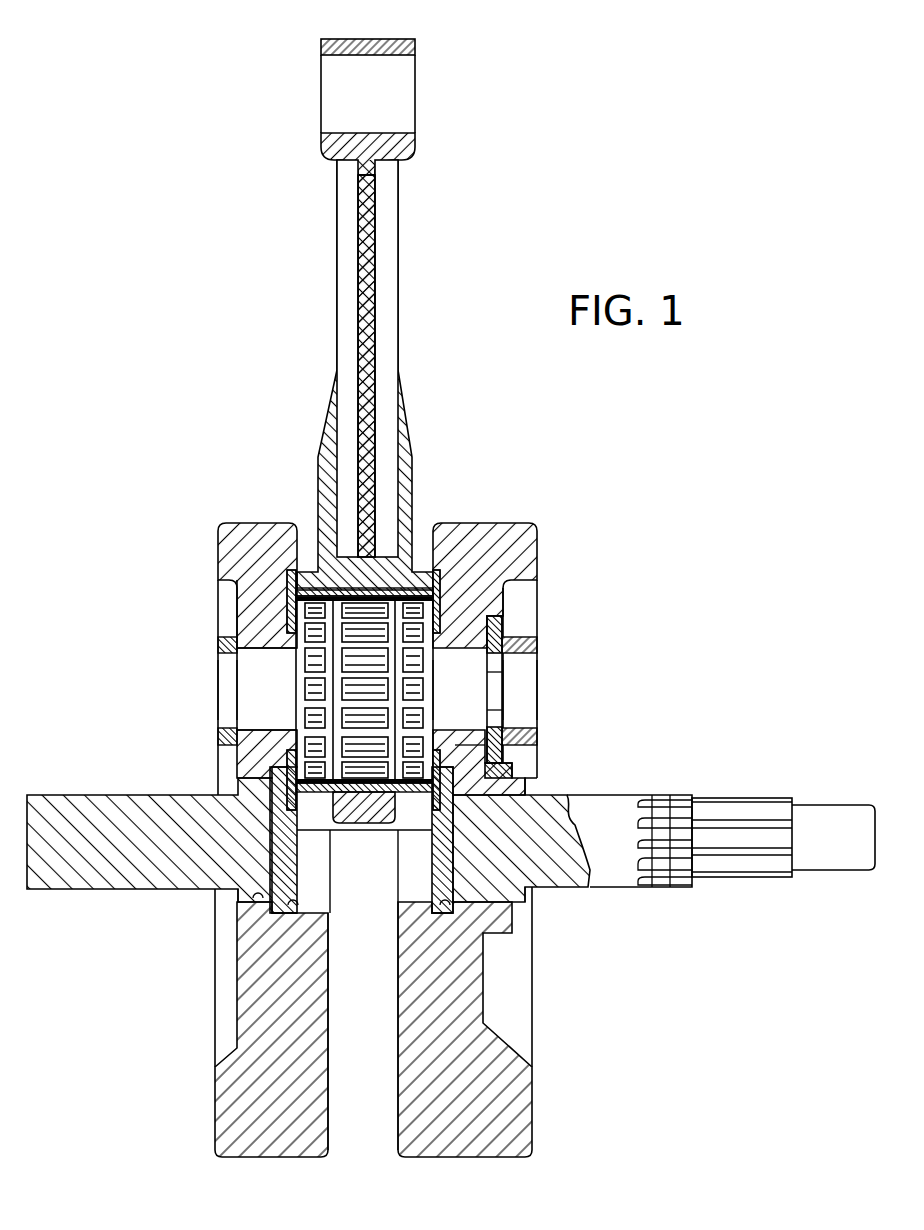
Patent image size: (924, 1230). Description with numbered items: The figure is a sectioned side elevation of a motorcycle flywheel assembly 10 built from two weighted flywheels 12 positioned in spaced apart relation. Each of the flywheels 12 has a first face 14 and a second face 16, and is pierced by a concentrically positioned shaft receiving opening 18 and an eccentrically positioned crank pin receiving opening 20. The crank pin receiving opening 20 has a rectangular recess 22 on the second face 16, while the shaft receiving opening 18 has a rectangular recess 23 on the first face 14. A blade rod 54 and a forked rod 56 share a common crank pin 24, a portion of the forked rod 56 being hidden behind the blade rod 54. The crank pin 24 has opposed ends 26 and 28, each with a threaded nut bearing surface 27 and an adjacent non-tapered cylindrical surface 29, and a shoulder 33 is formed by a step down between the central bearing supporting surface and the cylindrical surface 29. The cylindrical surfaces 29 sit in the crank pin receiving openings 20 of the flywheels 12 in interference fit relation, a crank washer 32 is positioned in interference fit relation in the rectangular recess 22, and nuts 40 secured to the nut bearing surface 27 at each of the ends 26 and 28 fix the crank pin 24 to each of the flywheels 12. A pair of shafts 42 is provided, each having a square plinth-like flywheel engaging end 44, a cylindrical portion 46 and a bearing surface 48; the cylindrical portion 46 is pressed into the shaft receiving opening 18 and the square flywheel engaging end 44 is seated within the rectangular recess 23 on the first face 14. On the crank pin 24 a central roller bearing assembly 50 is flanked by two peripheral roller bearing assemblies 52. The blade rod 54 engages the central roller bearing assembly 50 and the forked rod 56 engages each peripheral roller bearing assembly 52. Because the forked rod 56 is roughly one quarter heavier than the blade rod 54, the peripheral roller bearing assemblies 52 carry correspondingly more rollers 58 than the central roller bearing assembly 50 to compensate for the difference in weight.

The motorcycle flywheel assembly 10 is at (226, 480).
The weighted flywheels 12 is at (230, 565).
The first face 14 is at (328, 1020).
The second face 16 is at (215, 1105).
The shaft receiving opening 18 is at (510, 812).
The crank pin receiving opening 20 is at (222, 662).
The rectangular recess 22 is at (470, 748).
The rectangular recess 23 is at (300, 912).
The crank pin 24 is at (266, 706).
The end 26 is at (538, 680).
The threaded nut bearing surface 27 is at (228, 710).
The end 28 is at (225, 694).
The non-tapered cylindrical surface 29 is at (470, 695).
The crank washer 32 is at (503, 628).
The shoulder 33 is at (433, 598).
The nuts 40 is at (525, 645).
The shafts 42 is at (127, 872).
The square flywheel engaging end 44 is at (437, 882).
The cylindrical portion 46 is at (240, 893).
The bearing surface 48 is at (290, 866).
The central roller bearing assembly 50 is at (372, 630).
The peripheral roller bearing assemblies 52 is at (320, 548).
The blade rod 54 is at (365, 285).
The forked rod 56 is at (408, 432).
The rollers 58 is at (348, 672).